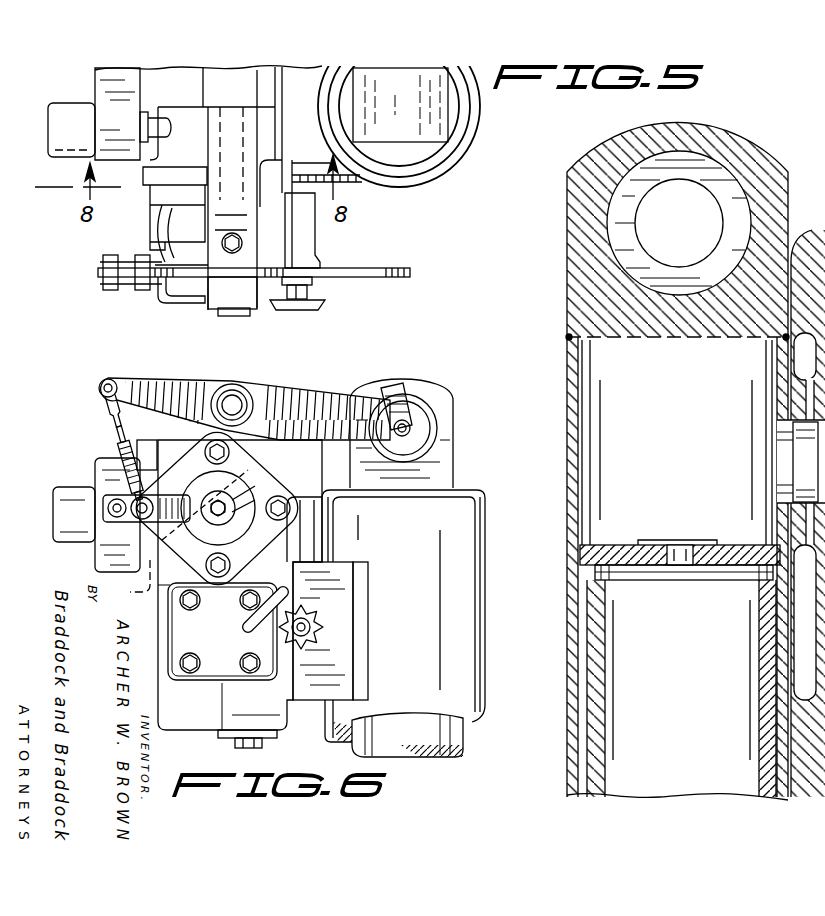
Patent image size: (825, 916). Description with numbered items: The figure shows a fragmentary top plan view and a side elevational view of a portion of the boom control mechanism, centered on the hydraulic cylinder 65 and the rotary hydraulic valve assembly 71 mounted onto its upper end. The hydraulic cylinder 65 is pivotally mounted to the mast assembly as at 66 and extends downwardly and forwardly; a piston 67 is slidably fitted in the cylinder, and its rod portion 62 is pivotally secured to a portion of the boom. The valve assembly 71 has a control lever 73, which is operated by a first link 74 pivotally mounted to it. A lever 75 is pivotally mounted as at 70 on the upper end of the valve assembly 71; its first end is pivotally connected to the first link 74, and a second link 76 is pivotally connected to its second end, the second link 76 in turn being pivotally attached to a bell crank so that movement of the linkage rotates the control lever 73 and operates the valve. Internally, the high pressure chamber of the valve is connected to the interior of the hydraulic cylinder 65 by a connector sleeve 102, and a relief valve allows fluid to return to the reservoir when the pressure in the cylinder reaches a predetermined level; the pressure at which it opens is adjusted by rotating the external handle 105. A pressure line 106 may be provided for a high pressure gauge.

In FIG. 5, the rod portion 62 is at (769, 797).
In FIG. 6, the rod portion 62 is at (462, 737).
In FIG. 5, the hydraulic cylinder 65 is at (479, 150).
In FIG. 6, the hydraulic cylinder 65 is at (480, 572).
In FIG. 5, the pivotal mounting 66 is at (703, 237).
In FIG. 6, the pivotal mounting 66 is at (438, 442).
In FIG. 5, the piston 67 is at (625, 545).
In FIG. 5, the pivot 70 is at (232, 314).
In FIG. 6, the pivot 70 is at (237, 392).
In FIG. 5, the rotary hydraulic valve assembly 71 is at (295, 243).
In FIG. 6, the rotary hydraulic valve assembly 71 is at (72, 487).
In FIG. 5, the control lever 73 is at (396, 278).
In FIG. 6, the control lever 73 is at (178, 503).
In FIG. 6, the first link 74 is at (118, 416).
In FIG. 6, the lever 75 is at (157, 381).
In FIG. 6, the second link 76 is at (402, 398).
In FIG. 5, the connector sleeve 102 is at (803, 428).
In FIG. 5, the external handle 105 is at (308, 314).
In FIG. 6, the external handle 105 is at (326, 629).
In FIG. 6, the pressure line 106 is at (283, 590).